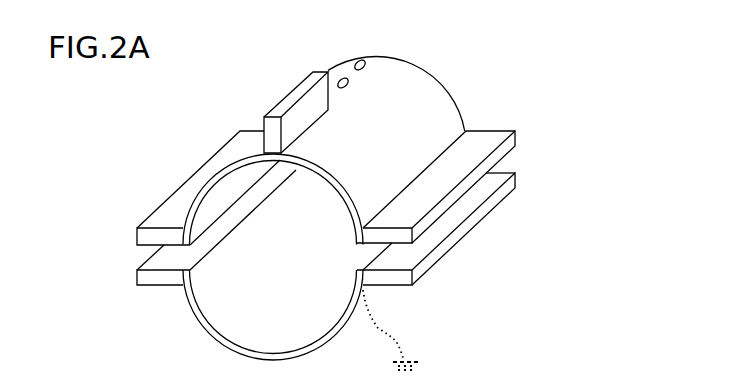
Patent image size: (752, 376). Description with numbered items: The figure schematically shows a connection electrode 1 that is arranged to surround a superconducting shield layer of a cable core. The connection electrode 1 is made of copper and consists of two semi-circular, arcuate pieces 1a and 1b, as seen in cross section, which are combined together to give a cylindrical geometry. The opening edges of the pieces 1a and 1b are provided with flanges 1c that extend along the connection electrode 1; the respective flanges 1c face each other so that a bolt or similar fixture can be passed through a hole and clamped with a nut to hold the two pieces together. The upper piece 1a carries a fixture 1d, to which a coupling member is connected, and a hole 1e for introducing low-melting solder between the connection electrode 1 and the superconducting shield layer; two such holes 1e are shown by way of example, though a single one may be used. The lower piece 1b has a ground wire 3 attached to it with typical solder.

The connection electrode 1 is at (529, 169).
The piece 1a is at (445, 103).
The piece 1b is at (200, 328).
The flanges 1c is at (147, 237).
The fixture 1d is at (292, 98).
The hole 1e is at (350, 58).
The ground wire 3 is at (399, 343).